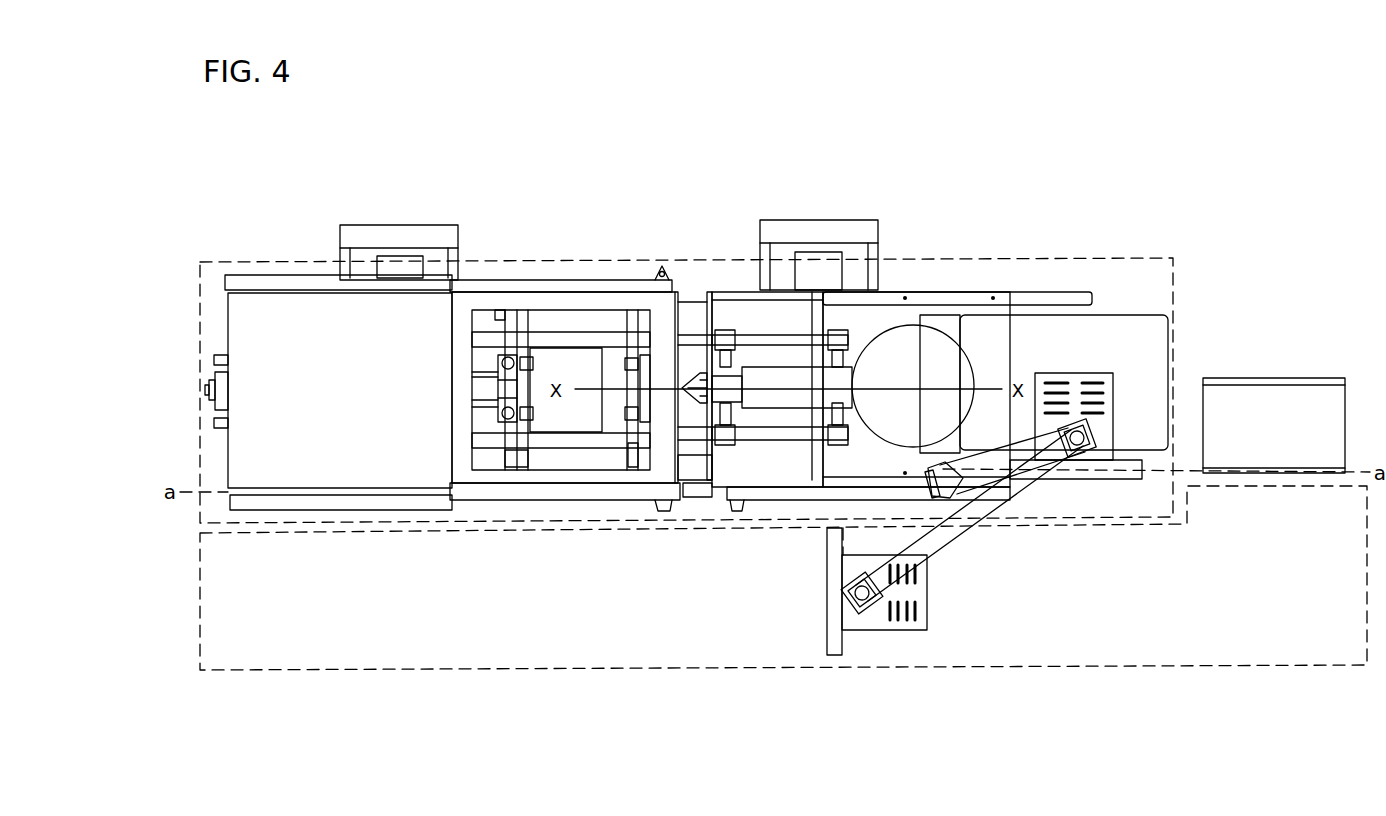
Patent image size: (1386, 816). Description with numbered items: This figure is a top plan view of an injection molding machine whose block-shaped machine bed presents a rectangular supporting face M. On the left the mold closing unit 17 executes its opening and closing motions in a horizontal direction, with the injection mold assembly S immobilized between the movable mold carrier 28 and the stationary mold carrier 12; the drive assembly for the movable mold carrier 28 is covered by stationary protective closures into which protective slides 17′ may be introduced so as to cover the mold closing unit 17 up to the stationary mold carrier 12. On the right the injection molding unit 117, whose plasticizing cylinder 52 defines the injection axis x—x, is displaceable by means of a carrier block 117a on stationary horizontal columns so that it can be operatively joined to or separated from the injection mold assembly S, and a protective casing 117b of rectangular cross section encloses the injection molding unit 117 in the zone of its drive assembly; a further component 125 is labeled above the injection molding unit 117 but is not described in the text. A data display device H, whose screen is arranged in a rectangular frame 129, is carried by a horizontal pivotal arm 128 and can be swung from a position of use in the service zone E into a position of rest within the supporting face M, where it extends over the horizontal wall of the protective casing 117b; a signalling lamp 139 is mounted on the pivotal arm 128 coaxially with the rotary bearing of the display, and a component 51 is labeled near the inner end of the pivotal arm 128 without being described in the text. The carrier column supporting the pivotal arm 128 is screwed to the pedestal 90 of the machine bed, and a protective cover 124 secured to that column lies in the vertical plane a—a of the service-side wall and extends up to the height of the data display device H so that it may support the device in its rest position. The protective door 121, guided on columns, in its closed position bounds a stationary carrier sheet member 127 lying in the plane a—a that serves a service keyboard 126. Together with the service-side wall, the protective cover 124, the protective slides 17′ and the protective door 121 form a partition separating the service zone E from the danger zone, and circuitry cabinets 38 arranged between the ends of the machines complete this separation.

The mold closing unit 17 is at (393, 168).
The protective slides 17′ is at (645, 477).
The supporting face M is at (517, 260).
The stationary mold carrier 12 is at (682, 372).
The injection unit 125 is at (748, 292).
The plasticizing cylinder 52 is at (777, 375).
The injection molding unit 117 is at (1022, 184).
The carrier block 117a is at (940, 303).
The protective casing 117b is at (1143, 333).
The pedestal 90 is at (1048, 297).
The circuitry cabinet 38 is at (1272, 408).
The movable mold carrier 28 is at (558, 445).
The injection mold assembly S is at (590, 453).
The carrier sheet member 127 is at (680, 497).
The service keyboard 126 is at (705, 497).
The protective door 121 is at (758, 490).
The gripper 51 is at (930, 470).
The pivotal arm 128 is at (1005, 470).
The signalling lamp 139 is at (1070, 450).
The data display device H is at (794, 596).
The frame 129 is at (838, 622).
The protective cover 124 is at (1130, 480).
The service zone E is at (623, 643).